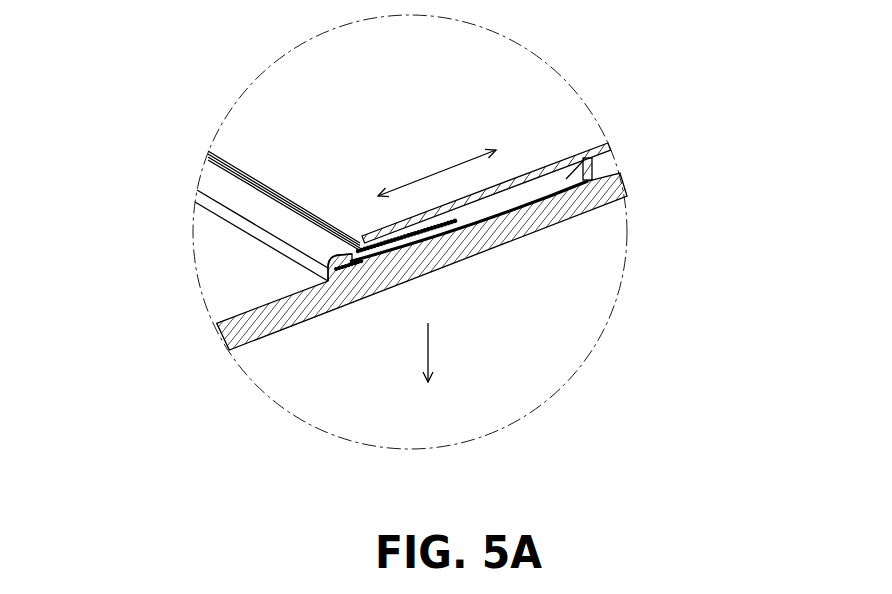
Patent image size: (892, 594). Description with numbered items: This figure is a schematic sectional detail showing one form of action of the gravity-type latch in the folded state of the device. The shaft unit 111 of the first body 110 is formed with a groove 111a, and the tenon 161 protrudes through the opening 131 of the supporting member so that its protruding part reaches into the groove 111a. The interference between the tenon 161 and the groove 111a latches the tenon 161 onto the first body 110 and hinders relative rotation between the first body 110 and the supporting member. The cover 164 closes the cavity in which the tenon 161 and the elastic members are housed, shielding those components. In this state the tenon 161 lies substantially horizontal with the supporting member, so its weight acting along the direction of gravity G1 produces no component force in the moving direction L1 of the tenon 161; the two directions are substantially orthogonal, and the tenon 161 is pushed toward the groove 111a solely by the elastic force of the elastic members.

The first body 110 is at (304, 310).
The shaft unit 111 is at (250, 204).
The groove 111a is at (355, 273).
The opening 131 is at (353, 250).
The tenon 161 is at (414, 234).
The cover 164 is at (563, 180).
The moving direction L1 is at (437, 166).
The direction of gravity G1 is at (448, 352).